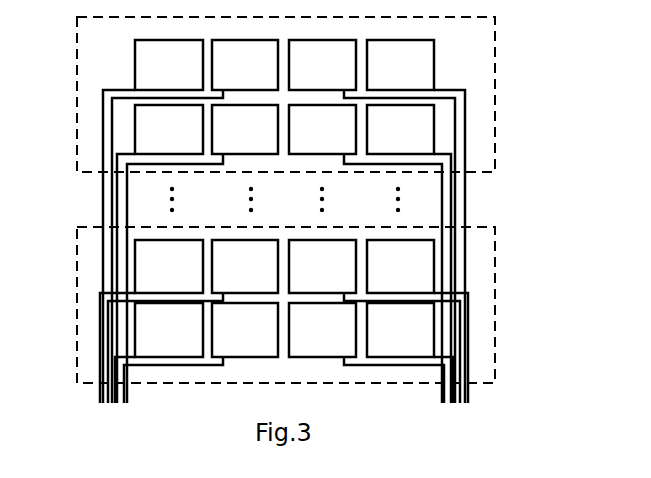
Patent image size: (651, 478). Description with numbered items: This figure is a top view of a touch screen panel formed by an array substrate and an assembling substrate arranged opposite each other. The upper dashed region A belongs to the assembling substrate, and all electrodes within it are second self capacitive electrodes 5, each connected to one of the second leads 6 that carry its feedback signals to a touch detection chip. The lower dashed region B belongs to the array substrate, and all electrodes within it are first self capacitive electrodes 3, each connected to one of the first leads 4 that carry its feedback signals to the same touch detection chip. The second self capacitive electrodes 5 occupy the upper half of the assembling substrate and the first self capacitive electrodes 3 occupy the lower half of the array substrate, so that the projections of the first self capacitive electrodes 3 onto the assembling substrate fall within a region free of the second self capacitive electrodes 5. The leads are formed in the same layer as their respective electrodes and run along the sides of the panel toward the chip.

The first self capacitive electrodes 3 is at (232, 288).
The first leads 4 is at (247, 345).
The second self capacitive electrodes 5 is at (232, 85).
The second leads 6 is at (247, 246).
The region A is at (317, 94).
The region B is at (317, 305).